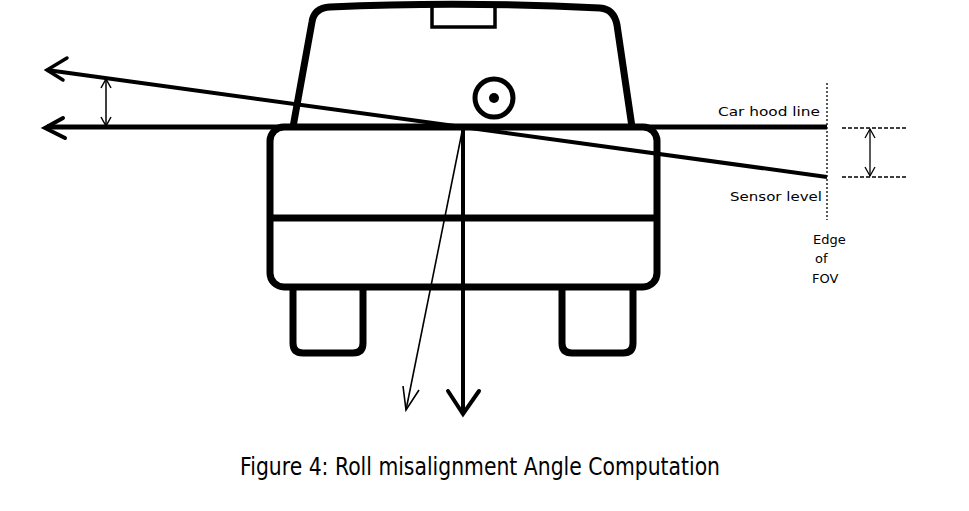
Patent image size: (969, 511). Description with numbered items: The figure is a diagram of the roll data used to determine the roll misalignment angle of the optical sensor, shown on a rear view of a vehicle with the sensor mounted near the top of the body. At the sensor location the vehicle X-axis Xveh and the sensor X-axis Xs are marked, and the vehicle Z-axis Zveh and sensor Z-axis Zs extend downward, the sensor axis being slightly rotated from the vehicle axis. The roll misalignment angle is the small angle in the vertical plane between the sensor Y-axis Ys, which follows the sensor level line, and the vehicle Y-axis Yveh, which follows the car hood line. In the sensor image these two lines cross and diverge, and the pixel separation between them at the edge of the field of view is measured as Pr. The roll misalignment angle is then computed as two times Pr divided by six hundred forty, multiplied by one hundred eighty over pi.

The vehicle X-axis Xveh is at (484, 87).
The sensor X-axis Xs is at (511, 66).
The vehicle Y-axis Yveh is at (433, 143).
The sensor Y-axis Ys is at (434, 108).
The vehicle Z-axis Zveh is at (484, 282).
The sensor Z-axis Zs is at (418, 280).
The pixels between the two lines at the edge of the image Pr is at (874, 152).